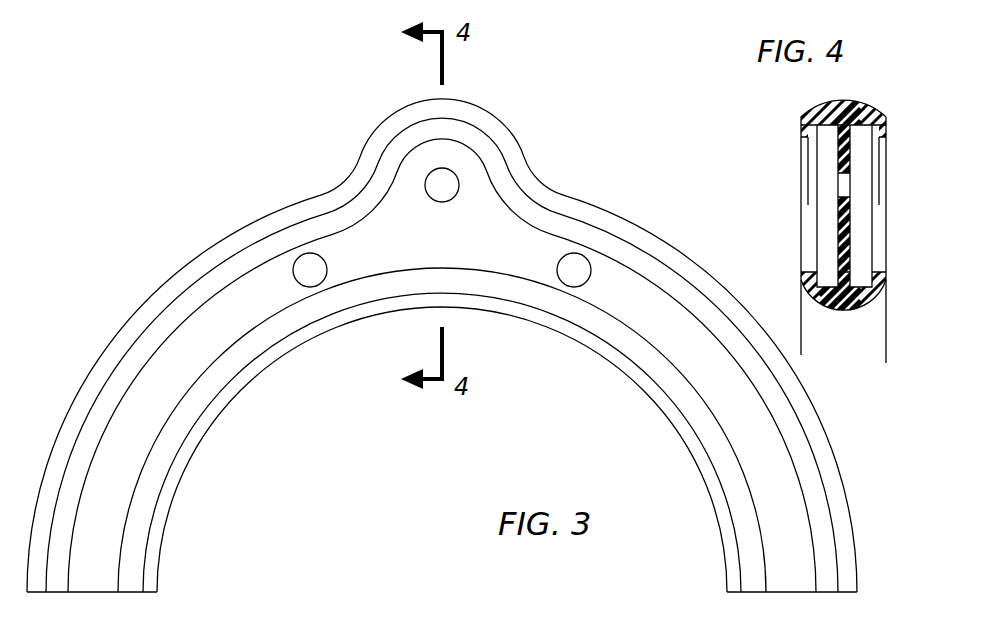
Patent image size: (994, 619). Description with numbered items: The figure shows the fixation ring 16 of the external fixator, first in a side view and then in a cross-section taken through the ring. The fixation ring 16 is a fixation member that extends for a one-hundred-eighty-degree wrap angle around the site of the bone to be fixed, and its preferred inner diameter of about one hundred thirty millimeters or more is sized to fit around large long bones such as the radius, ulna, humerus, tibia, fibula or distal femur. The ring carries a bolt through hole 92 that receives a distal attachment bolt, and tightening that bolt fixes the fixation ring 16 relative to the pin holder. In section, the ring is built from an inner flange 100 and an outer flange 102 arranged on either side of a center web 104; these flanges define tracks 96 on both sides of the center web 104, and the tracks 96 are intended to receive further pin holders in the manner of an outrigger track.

In FIG. 3, the fixation ring 16 is at (184, 172).
In FIG. 3, the bolt through hole 92 is at (426, 183).
In FIG. 4, the bolt through hole 92 is at (838, 183).
In FIG. 3, the tracks 96 is at (120, 498).
In FIG. 4, the tracks 96 is at (827, 275).
In FIG. 3, the inner flange 100 is at (635, 382).
In FIG. 4, the inner flange 100 is at (818, 303).
In FIG. 3, the outer flange 102 is at (526, 155).
In FIG. 4, the outer flange 102 is at (820, 102).
In FIG. 3, the center web 104 is at (178, 367).
In FIG. 4, the center web 104 is at (837, 238).